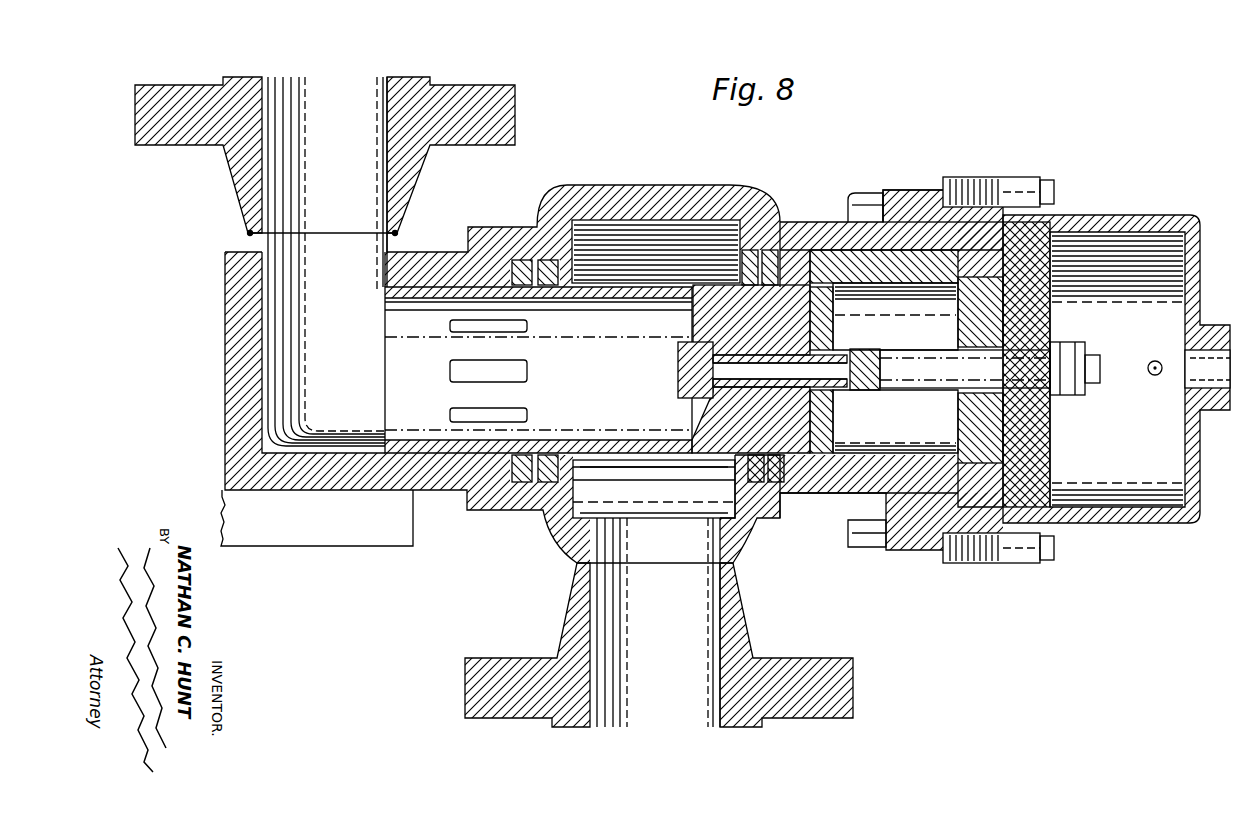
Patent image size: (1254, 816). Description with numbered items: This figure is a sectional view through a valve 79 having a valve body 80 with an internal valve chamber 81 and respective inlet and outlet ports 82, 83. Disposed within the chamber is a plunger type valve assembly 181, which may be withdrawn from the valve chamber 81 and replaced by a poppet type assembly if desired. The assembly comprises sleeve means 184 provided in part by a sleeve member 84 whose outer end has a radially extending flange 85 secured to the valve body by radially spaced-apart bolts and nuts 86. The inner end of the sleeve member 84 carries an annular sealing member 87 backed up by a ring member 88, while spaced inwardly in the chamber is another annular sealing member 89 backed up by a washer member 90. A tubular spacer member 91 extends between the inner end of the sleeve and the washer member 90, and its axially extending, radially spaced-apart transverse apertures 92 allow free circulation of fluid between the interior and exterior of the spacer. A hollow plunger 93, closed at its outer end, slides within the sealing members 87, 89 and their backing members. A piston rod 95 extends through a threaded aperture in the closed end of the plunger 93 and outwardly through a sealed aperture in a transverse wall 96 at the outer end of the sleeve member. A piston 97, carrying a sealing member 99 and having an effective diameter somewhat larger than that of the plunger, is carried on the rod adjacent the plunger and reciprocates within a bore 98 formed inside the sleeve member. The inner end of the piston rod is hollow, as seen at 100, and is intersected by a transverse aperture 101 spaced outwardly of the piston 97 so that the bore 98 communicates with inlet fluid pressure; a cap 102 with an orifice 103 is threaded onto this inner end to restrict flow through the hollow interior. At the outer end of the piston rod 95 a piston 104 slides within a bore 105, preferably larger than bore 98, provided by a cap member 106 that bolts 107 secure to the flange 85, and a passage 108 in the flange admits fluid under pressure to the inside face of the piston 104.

The valve 79 is at (467, 528).
The valve body 80 is at (808, 220).
The internal valve chamber 81 is at (790, 475).
The inlet port 82 is at (355, 95).
The outlet port 83 is at (622, 715).
The sleeve member 84 is at (903, 248).
The radially extending flange 85 is at (962, 222).
The bolts and nuts 86 is at (863, 200).
The annular sealing member 87 is at (750, 252).
The ring member 88 is at (800, 475).
The annular sealing member 89 is at (522, 484).
The washer member 90 is at (547, 484).
The tubular spacer member 91 is at (653, 483).
The apertures 92 is at (668, 262).
The hollow plunger 93 is at (385, 388).
The piston rod 95 is at (1116, 315).
The transverse wall 96 is at (988, 450).
The piston 97 is at (840, 427).
The bore 98 is at (920, 346).
The sealing member 99 is at (853, 293).
The hollow inner end 100 is at (750, 352).
The transverse aperture 101 is at (850, 397).
The cap 102 is at (682, 390).
The orifice 103 is at (676, 373).
The piston 104 is at (1043, 437).
The bore 105 is at (1128, 500).
The cap member 106 is at (1100, 215).
The bolts 107 is at (1025, 550).
The passage 108 is at (974, 522).
The valve assembly 181 is at (690, 493).
The sleeve means 184 is at (622, 262).